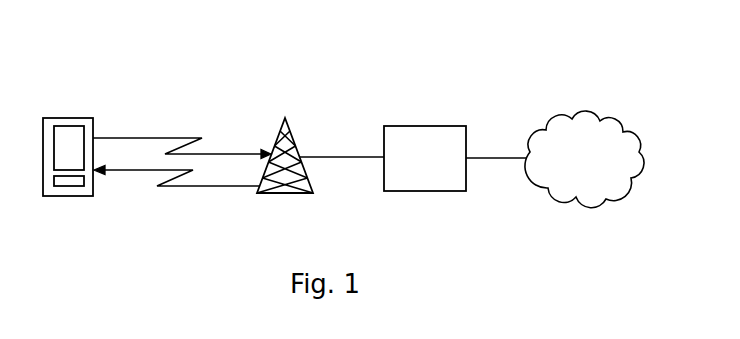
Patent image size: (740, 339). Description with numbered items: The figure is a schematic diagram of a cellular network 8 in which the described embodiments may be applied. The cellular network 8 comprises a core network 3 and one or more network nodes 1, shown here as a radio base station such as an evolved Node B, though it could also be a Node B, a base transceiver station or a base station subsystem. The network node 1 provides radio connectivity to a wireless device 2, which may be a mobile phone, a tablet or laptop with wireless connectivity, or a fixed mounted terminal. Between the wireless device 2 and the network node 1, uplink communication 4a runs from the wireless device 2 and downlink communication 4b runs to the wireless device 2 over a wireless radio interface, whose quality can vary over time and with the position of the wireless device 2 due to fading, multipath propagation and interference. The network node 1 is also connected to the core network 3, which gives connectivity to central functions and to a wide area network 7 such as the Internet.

The network node 1 is at (280, 135).
The wireless device 2 is at (68, 117).
The core network 3 is at (455, 158).
The uplink communication 4a is at (146, 137).
The downlink communication 4b is at (207, 187).
The wide area network 7 is at (584, 159).
The cellular network 8 is at (555, 93).